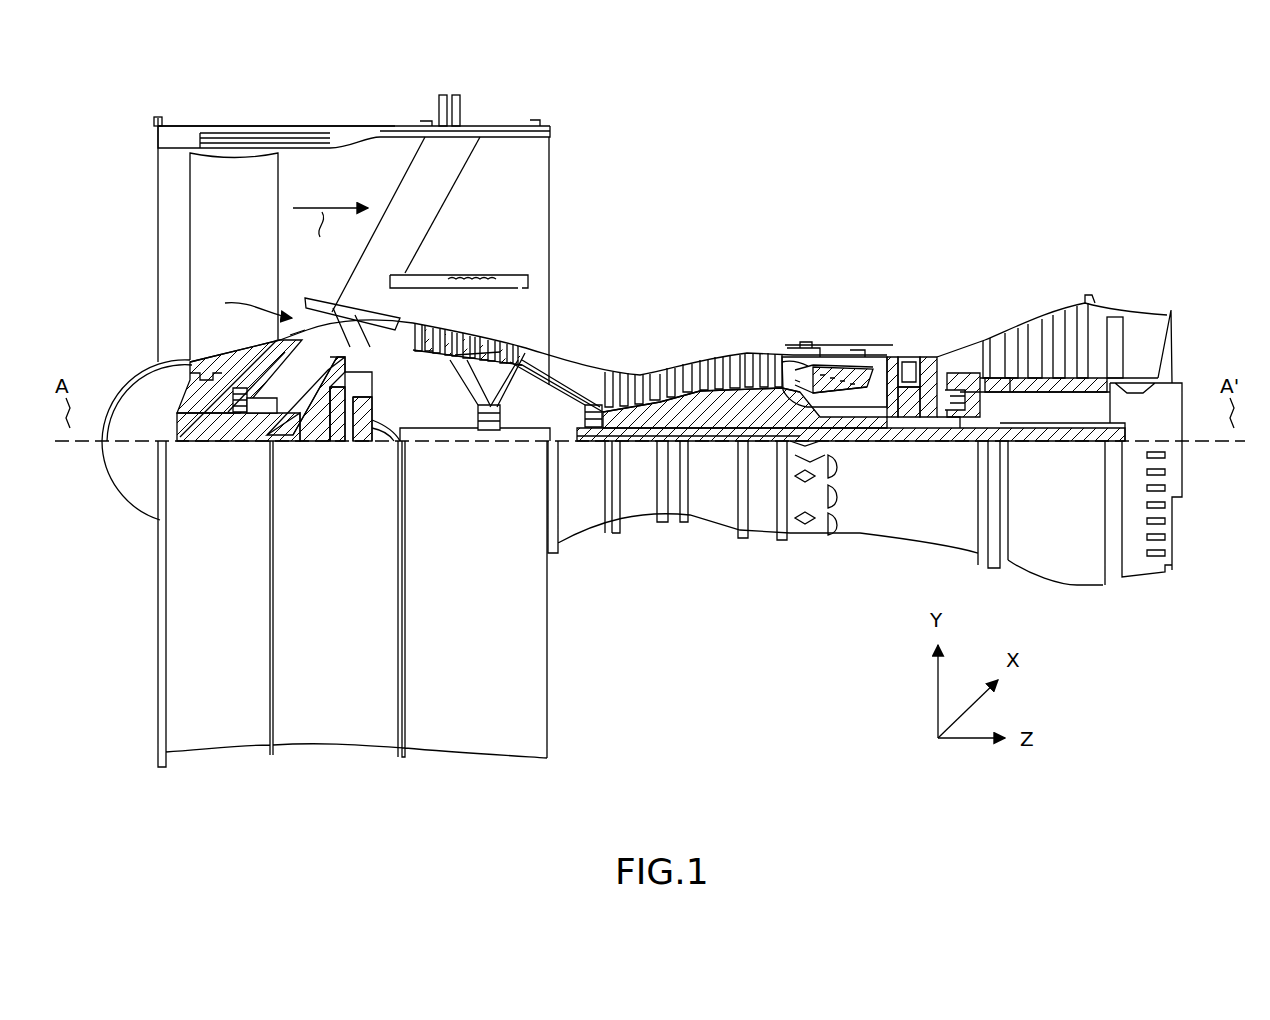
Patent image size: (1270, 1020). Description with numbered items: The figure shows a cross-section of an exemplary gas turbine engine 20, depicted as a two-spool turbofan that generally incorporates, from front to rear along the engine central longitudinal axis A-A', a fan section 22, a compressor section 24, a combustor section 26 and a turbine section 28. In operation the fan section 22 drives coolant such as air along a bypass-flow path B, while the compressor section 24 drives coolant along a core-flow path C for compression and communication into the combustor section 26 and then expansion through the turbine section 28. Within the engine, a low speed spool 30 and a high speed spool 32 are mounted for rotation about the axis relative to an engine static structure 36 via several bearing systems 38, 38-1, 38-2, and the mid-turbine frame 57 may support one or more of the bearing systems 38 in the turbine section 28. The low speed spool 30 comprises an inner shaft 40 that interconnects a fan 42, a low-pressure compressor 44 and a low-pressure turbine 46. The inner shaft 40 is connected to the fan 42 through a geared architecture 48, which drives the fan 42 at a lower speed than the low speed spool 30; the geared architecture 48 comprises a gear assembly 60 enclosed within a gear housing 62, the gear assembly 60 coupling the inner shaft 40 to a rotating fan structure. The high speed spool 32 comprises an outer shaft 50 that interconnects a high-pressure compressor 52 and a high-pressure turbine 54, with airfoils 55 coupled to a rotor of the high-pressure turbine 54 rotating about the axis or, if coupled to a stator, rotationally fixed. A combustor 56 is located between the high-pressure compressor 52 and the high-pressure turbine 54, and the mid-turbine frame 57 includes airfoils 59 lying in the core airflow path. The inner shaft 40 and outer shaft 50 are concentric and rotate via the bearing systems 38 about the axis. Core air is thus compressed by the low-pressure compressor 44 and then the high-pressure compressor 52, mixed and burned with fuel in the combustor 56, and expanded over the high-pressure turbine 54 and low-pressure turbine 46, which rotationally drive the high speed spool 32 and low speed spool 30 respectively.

The gas turbine engine 20 is at (892, 158).
The fan section 22 is at (395, 102).
The compressor section 24 is at (408, 237).
The combustor section 26 is at (893, 237).
The turbine section 28 is at (1112, 237).
The low speed spool 30 is at (722, 460).
The high speed spool 32 is at (757, 410).
The engine static structure 36 is at (332, 727).
The bearing system 38 is at (958, 441).
The bearing system 38-1 is at (243, 437).
The bearing system 38-2 is at (502, 445).
The inner shaft 40 is at (572, 445).
The fan 42 is at (245, 255).
The low-pressure compressor 44 is at (480, 337).
The low-pressure turbine 46 is at (1043, 325).
The geared architecture 48 is at (362, 460).
The outer shaft 50 is at (822, 450).
The high-pressure compressor 52 is at (698, 405).
The high-pressure turbine 54 is at (912, 355).
The airfoils 55 is at (886, 355).
The combustor 56 is at (835, 380).
The mid-turbine frame 57 is at (948, 352).
The airfoils 59 is at (966, 370).
The gear assembly 60 is at (402, 440).
The gear housing 62 is at (372, 395).